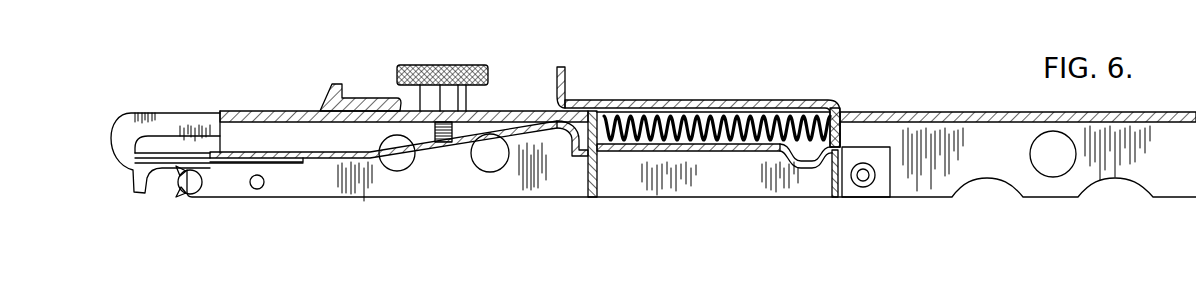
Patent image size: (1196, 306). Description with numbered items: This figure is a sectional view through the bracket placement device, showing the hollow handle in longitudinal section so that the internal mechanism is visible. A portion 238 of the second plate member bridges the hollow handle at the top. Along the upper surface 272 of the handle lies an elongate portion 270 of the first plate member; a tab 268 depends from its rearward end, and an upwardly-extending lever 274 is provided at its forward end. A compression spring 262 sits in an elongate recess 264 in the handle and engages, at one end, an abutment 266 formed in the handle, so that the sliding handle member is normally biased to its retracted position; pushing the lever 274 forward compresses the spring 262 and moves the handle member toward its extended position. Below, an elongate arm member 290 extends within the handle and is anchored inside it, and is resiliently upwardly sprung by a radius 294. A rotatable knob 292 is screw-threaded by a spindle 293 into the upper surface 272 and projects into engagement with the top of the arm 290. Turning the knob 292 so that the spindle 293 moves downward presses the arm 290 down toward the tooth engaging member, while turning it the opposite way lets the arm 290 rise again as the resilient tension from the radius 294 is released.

The bridging portion 238 is at (363, 102).
The rotatable knob 292 is at (448, 65).
The upper surface 272 is at (505, 110).
The upwardly-extending lever 274 is at (560, 67).
The abutment 266 is at (605, 128).
The elongate recess 264 is at (703, 123).
The elongate portion 270 is at (772, 102).
The compression spring 262 is at (830, 118).
The tab 268 is at (843, 133).
The elongate arm member 290 is at (401, 187).
The spindle 293 is at (460, 160).
The radius 294 is at (560, 137).